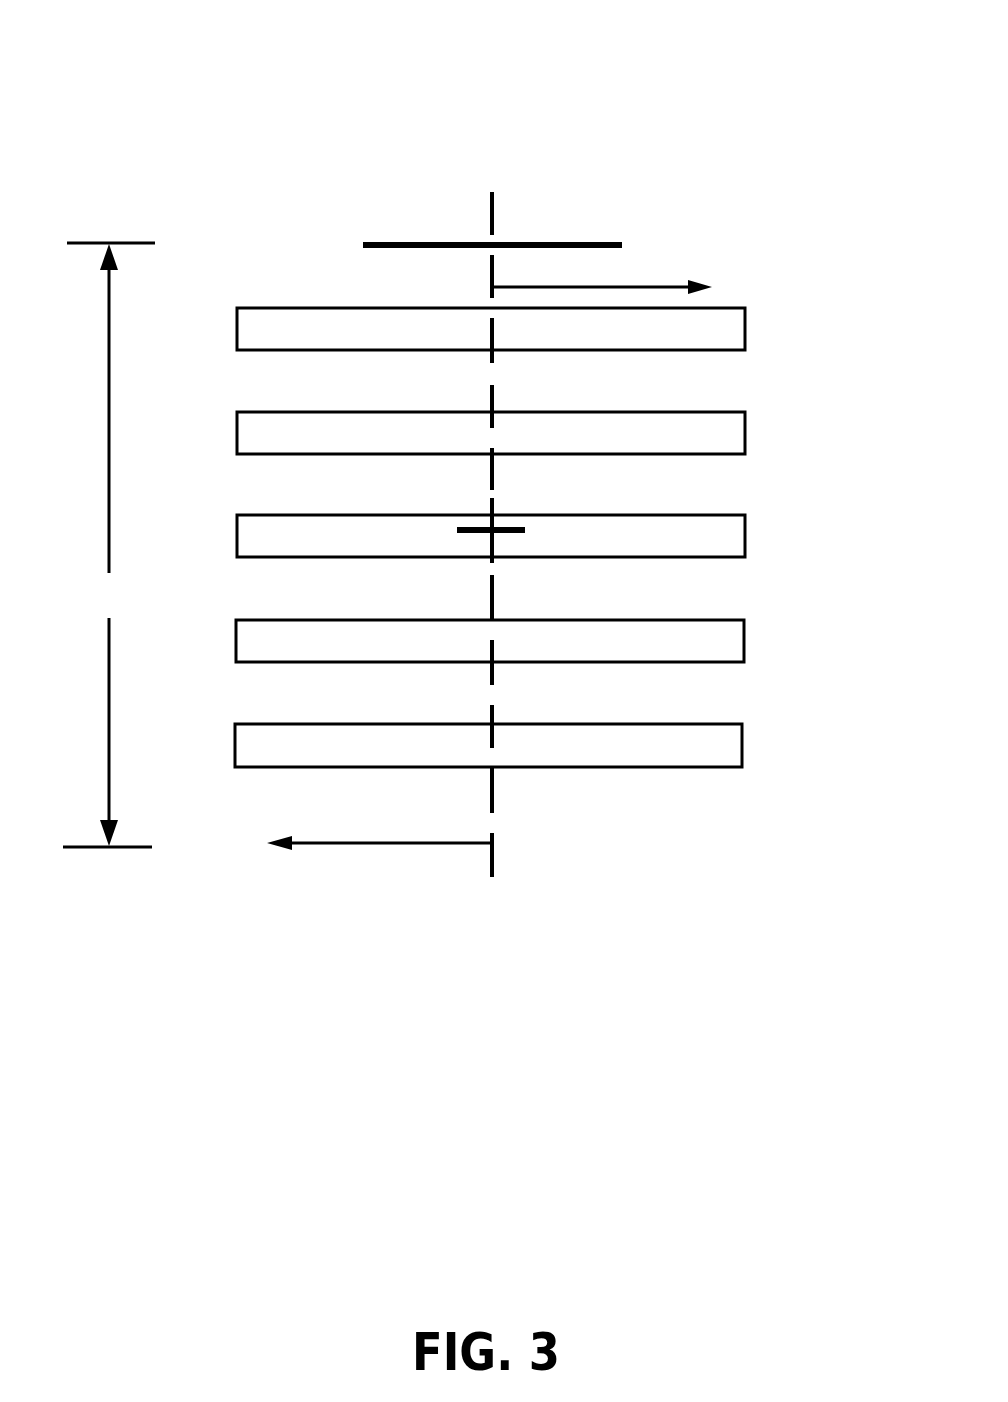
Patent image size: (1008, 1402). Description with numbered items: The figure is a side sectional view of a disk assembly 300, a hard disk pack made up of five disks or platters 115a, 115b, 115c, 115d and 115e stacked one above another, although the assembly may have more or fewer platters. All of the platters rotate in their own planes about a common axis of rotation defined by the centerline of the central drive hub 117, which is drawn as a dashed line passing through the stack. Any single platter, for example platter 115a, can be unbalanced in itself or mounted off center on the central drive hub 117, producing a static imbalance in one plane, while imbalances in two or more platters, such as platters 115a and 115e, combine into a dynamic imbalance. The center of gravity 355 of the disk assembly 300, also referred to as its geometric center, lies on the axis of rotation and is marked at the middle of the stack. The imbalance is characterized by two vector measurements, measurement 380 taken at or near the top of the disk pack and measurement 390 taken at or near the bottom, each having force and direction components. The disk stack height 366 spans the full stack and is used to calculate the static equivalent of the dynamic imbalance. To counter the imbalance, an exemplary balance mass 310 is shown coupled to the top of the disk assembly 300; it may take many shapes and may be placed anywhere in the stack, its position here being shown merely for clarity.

The disk assembly 300 is at (525, 53).
The central drive hub 117 is at (493, 519).
The balance mass 310 is at (385, 243).
The measurement 380 is at (602, 273).
The platter 115a is at (748, 333).
The platter 115b is at (748, 437).
The platter 115c is at (748, 540).
The platter 115d is at (747, 645).
The platter 115e is at (745, 750).
The center of gravity 355 is at (469, 527).
The disk stack height 366 is at (109, 545).
The measurement 390 is at (378, 829).